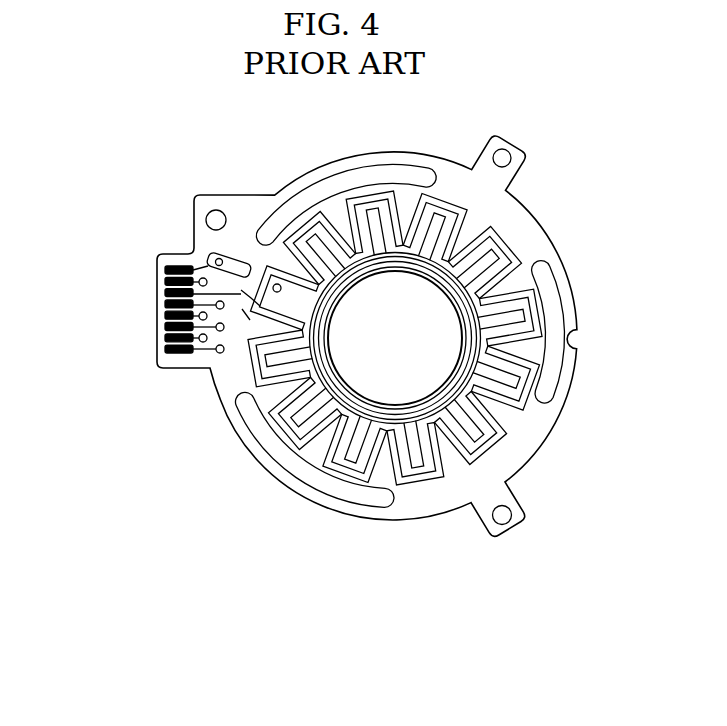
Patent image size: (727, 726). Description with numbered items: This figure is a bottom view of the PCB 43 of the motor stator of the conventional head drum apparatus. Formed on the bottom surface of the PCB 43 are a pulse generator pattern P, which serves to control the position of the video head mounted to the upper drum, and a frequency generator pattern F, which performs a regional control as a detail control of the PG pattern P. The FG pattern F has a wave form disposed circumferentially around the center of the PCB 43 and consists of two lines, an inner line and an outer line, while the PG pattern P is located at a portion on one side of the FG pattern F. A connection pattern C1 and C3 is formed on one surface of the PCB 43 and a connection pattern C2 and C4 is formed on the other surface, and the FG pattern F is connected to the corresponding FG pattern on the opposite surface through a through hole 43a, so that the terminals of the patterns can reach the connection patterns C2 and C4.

The PCB 43 is at (532, 242).
The through hole 43a is at (210, 258).
The PG pattern P is at (233, 258).
The connection pattern C1 is at (165, 270).
The connection pattern C2 is at (165, 282).
The connection pattern C3 is at (165, 293).
The connection pattern C4 is at (165, 305).
The FG pattern F is at (280, 435).